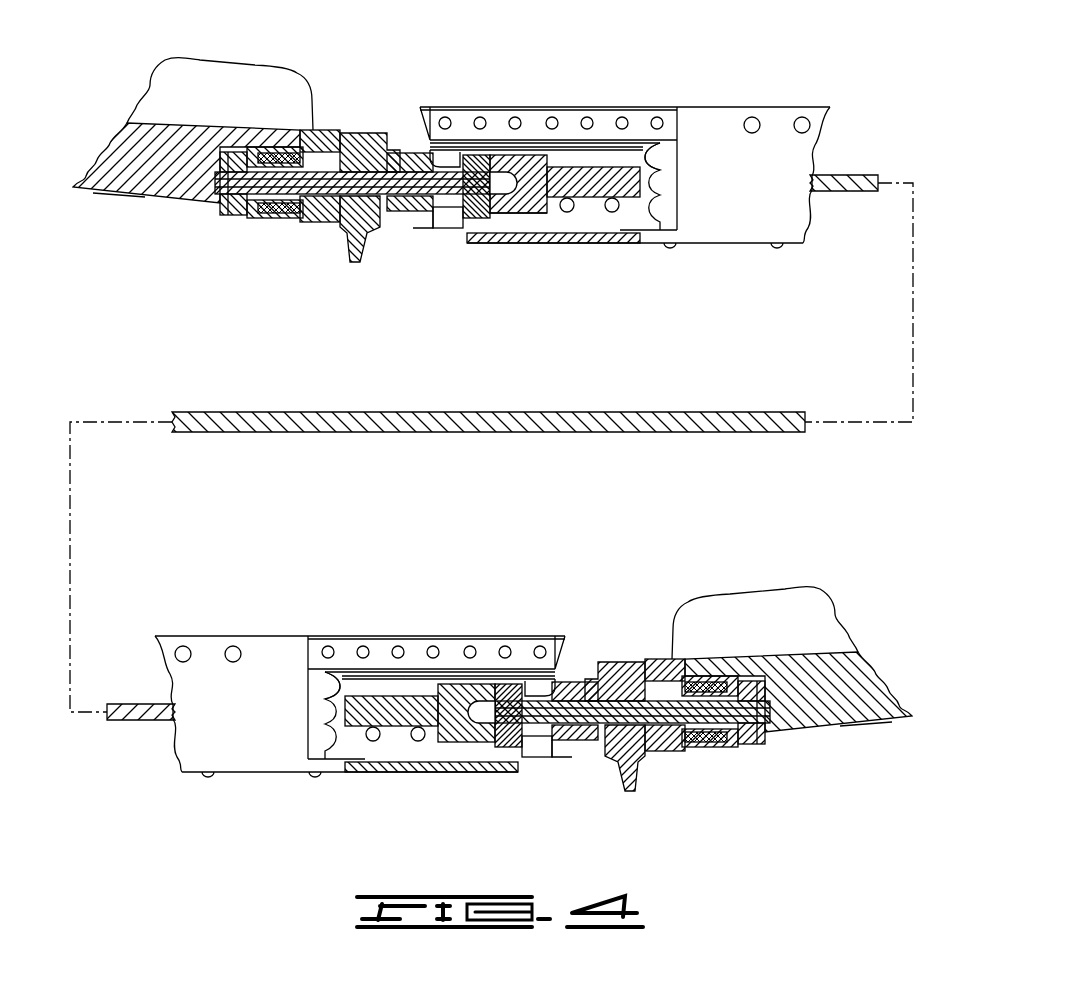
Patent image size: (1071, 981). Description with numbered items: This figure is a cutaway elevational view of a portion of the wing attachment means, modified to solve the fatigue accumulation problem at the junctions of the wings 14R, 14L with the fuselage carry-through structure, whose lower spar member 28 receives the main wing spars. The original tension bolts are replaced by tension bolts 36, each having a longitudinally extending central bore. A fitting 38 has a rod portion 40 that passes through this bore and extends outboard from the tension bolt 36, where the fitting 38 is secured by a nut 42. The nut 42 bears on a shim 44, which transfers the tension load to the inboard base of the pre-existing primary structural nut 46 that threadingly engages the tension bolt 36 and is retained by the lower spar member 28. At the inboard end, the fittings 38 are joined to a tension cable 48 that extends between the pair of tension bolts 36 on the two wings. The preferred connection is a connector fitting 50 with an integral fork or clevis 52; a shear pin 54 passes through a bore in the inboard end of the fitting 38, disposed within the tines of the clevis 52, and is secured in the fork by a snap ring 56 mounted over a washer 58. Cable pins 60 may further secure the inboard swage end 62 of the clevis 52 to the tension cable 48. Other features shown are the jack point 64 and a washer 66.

The left wing 14L is at (215, 64).
The right wing 14R is at (776, 592).
The lower spar member 28 is at (633, 107).
The tension bolt 36 is at (378, 137).
The fitting 38 is at (433, 167).
The rod portion 40 is at (360, 165).
The nut 42 is at (227, 217).
The shim 44 is at (252, 220).
The primary structural nut 46 is at (300, 218).
The tension cable 48 is at (853, 175).
The connector fitting 50 is at (645, 154).
The clevis 52 is at (515, 158).
The shear pin 54 is at (480, 225).
The snap ring 56 is at (498, 222).
The washer 58 is at (462, 214).
The cable pin 60 is at (616, 212).
The inboard swage end 62 is at (583, 190).
The jack point 64 is at (353, 262).
The washer 66 is at (392, 233).